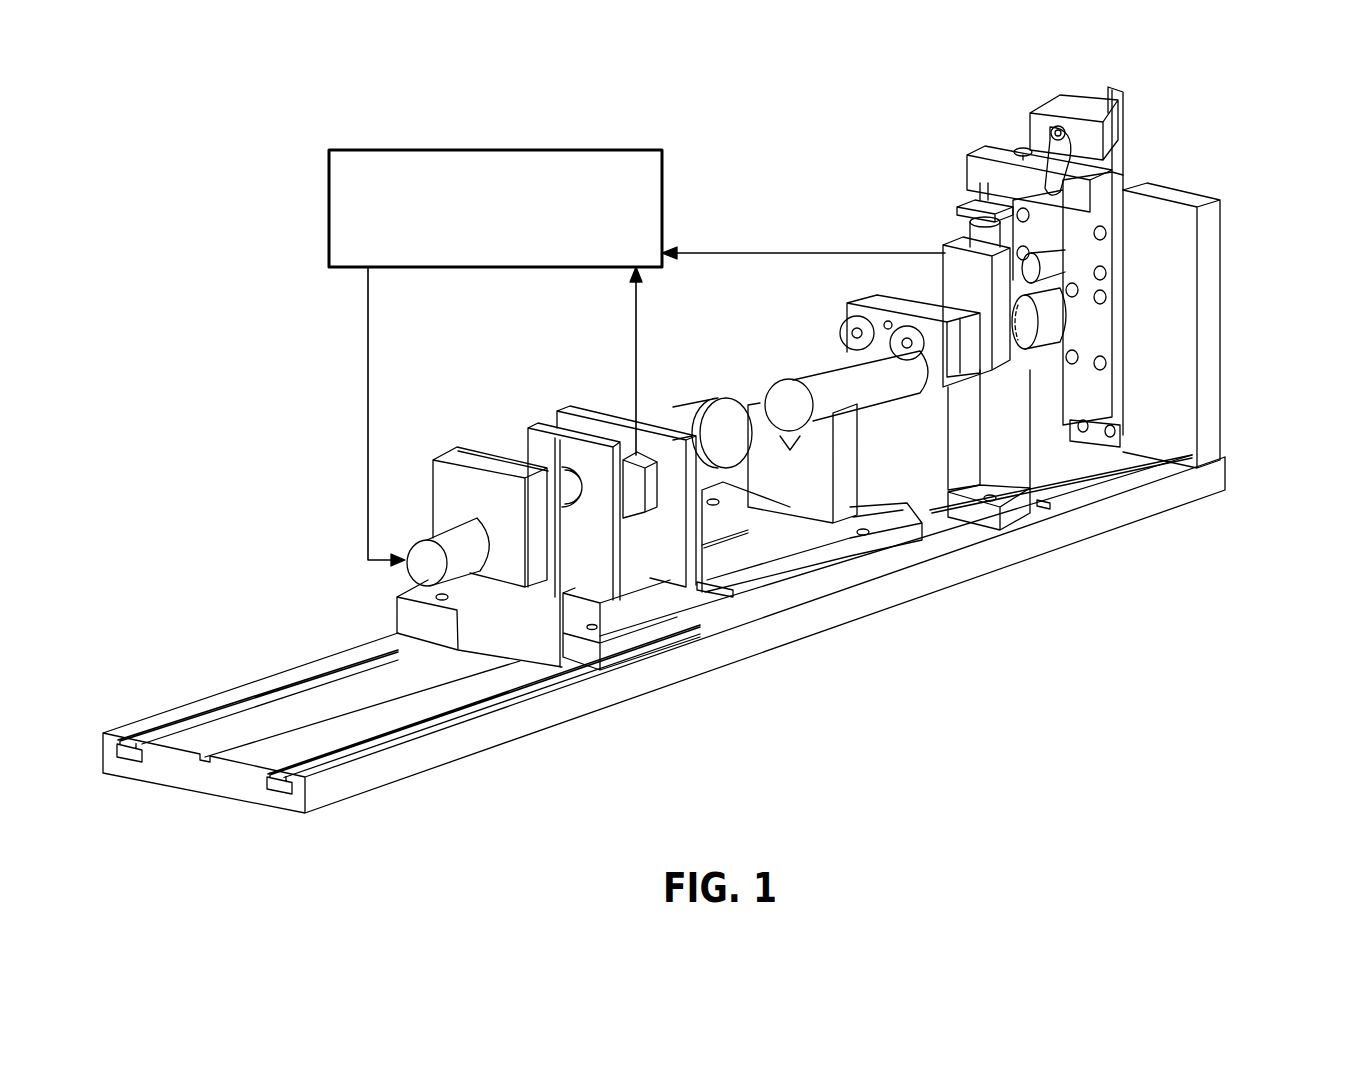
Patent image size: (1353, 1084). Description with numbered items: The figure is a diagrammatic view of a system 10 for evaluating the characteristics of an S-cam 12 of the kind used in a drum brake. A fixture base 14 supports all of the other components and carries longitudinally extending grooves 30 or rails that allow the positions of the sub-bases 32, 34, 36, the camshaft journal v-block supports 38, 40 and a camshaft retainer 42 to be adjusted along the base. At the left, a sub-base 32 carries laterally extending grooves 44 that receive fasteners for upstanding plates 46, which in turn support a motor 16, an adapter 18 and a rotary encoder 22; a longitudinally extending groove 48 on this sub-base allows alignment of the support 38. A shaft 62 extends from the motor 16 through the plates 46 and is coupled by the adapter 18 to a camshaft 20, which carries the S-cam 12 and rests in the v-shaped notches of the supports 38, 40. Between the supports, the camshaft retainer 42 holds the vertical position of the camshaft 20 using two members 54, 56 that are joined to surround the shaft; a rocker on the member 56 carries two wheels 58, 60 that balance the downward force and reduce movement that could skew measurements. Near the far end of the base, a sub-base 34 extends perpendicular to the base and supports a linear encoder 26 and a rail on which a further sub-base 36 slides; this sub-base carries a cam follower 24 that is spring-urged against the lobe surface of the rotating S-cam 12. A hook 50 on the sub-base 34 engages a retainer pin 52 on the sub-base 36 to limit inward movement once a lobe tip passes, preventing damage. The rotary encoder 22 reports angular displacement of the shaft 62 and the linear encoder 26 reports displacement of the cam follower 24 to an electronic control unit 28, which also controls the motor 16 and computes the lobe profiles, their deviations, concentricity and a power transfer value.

The system 10 is at (297, 314).
The S-cam 12 is at (1035, 333).
The fixture base 14 is at (412, 758).
The motor 16 is at (432, 495).
The adapter 18 is at (847, 477).
The camshaft 20 is at (870, 387).
The rotary encoder 22 is at (710, 547).
The cam follower 24 is at (1110, 260).
The linear encoder 26 is at (955, 252).
The electronic control unit 28 is at (329, 207).
The longitudinally extending grooves 30 is at (275, 787).
The sub-base 32 is at (710, 447).
The sub-base 34 is at (1210, 273).
The sub-base 36 is at (1165, 258).
The camshaft journal v-block support 38 is at (853, 440).
The camshaft journal v-block support 40 is at (1040, 442).
The camshaft retainer 42 is at (963, 432).
The laterally extending grooves 44 is at (648, 498).
The upstanding plates 46 is at (598, 540).
The longitudinally extending groove 48 is at (783, 595).
The hook 50 is at (1093, 162).
The retainer pin 52 is at (1045, 185).
The member 54 is at (963, 452).
The member 56 is at (878, 302).
The wheel 58 is at (840, 332).
The wheel 60 is at (907, 330).
The shaft 62 is at (563, 505).